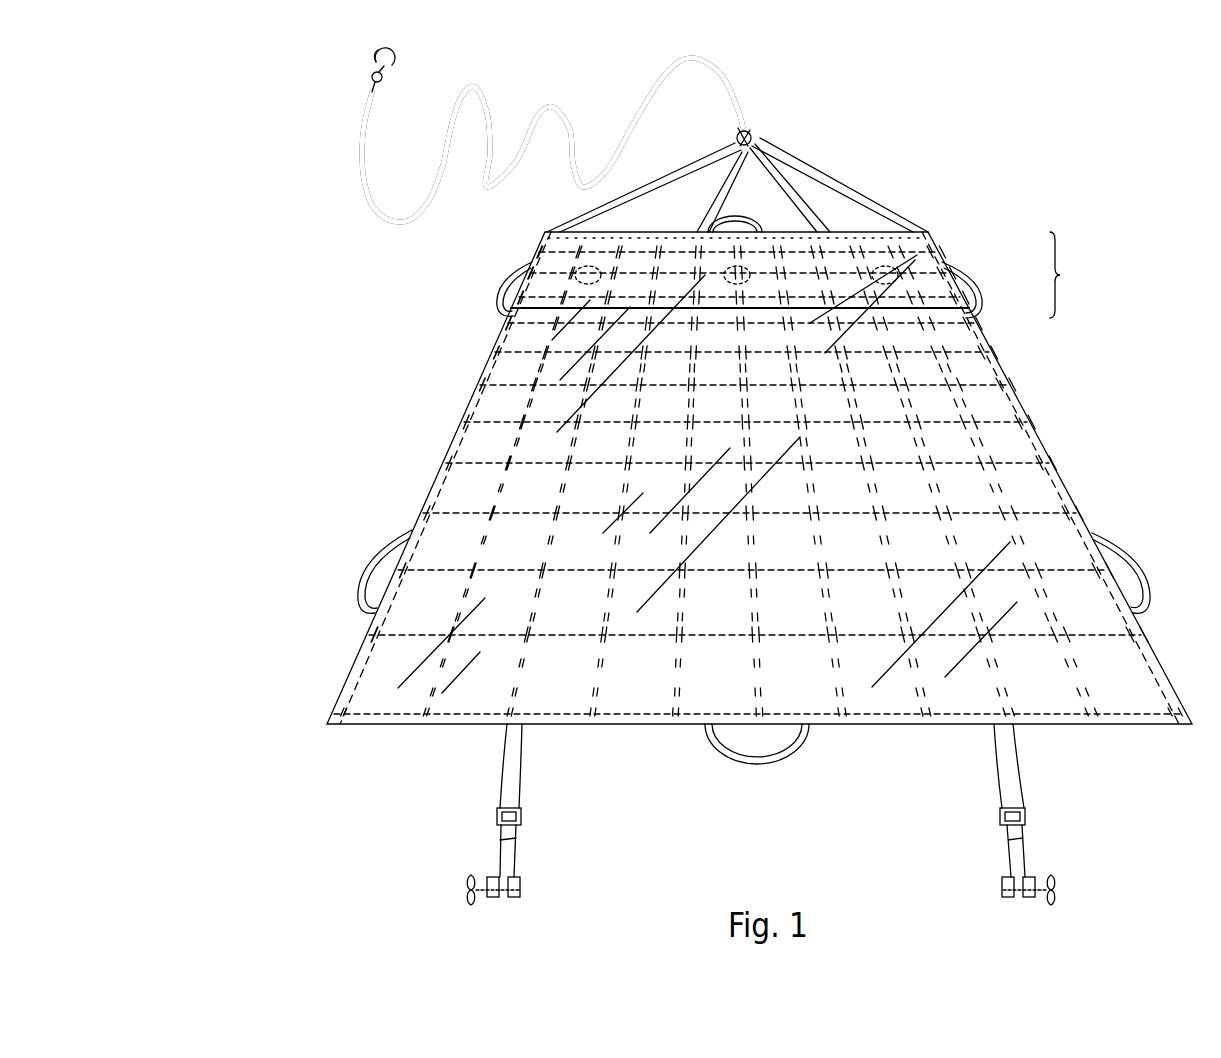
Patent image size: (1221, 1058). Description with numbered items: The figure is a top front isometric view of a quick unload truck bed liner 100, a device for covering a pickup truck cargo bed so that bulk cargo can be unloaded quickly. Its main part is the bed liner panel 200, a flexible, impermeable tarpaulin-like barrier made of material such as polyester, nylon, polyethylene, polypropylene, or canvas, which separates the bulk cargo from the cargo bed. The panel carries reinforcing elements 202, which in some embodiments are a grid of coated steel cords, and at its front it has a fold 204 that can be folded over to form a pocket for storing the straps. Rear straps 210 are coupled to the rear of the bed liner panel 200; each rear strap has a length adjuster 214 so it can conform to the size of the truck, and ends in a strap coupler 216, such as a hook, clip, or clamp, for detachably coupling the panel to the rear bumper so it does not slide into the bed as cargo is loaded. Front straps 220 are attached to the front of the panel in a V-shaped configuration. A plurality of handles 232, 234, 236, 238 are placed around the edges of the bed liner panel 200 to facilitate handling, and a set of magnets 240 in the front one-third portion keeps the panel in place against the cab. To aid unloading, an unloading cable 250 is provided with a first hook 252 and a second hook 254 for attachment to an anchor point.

The quick unload truck bed liner 100 is at (210, 187).
The bed liner panel 200 is at (1025, 422).
The reinforcing elements 202 is at (463, 513).
The fold 204 is at (808, 275).
The rear straps 210 is at (505, 752).
The length adjuster 214 is at (520, 815).
The strap coupler 216 is at (468, 893).
The front straps 220 is at (848, 188).
The handle 232 is at (762, 225).
The handle 234 is at (765, 757).
The handle 236 is at (1130, 562).
The handle 238 is at (367, 573).
The magnets 240 is at (580, 283).
The unloading cable 250 is at (487, 105).
The first hook 252 is at (752, 136).
The second hook 254 is at (396, 62).